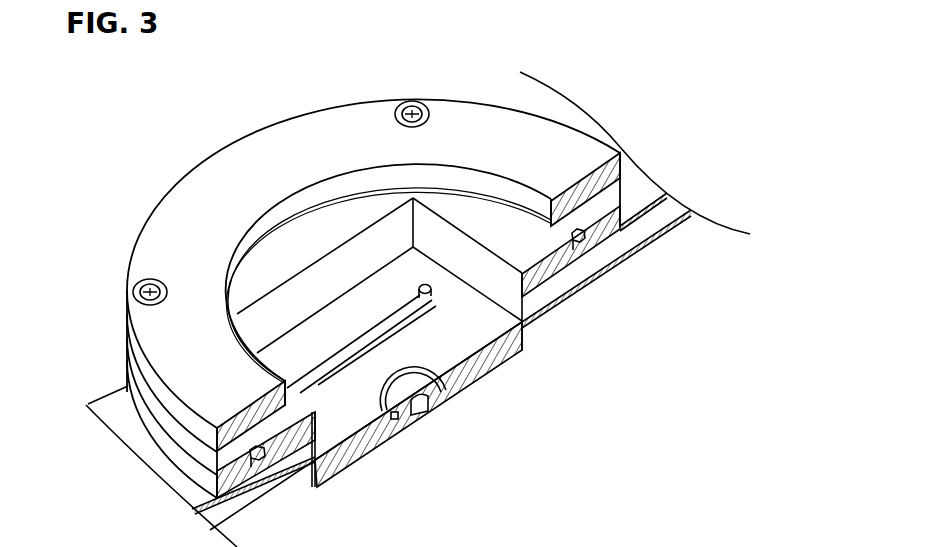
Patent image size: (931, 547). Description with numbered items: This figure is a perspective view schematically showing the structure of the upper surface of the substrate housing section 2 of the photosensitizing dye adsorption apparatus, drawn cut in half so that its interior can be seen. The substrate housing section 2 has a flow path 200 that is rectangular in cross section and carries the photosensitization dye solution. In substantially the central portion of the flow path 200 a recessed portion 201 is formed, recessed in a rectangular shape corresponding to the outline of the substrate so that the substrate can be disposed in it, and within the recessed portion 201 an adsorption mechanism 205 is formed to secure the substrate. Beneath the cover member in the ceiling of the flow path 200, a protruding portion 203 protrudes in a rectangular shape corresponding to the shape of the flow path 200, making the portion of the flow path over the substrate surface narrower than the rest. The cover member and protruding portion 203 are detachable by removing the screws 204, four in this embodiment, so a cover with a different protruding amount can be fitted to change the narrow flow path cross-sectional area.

The substrate housing section 2 is at (247, 96).
The flow path 200 is at (572, 277).
The recessed portion 201 is at (523, 355).
The protruding portion 203 is at (313, 446).
The screw 204 is at (416, 103).
The adsorption mechanism 205 is at (419, 414).